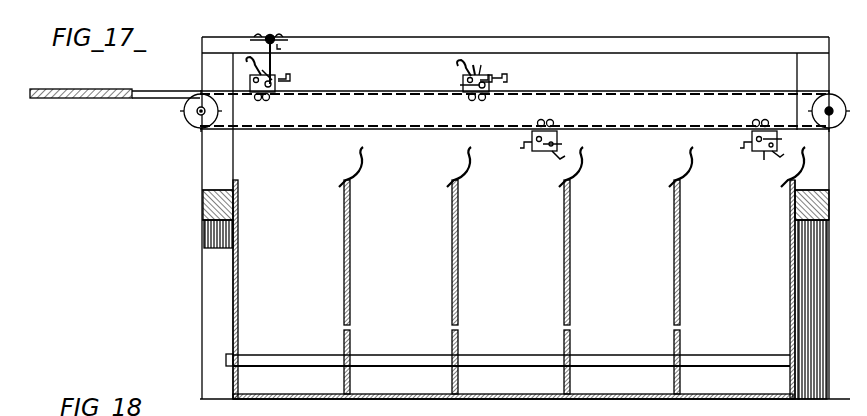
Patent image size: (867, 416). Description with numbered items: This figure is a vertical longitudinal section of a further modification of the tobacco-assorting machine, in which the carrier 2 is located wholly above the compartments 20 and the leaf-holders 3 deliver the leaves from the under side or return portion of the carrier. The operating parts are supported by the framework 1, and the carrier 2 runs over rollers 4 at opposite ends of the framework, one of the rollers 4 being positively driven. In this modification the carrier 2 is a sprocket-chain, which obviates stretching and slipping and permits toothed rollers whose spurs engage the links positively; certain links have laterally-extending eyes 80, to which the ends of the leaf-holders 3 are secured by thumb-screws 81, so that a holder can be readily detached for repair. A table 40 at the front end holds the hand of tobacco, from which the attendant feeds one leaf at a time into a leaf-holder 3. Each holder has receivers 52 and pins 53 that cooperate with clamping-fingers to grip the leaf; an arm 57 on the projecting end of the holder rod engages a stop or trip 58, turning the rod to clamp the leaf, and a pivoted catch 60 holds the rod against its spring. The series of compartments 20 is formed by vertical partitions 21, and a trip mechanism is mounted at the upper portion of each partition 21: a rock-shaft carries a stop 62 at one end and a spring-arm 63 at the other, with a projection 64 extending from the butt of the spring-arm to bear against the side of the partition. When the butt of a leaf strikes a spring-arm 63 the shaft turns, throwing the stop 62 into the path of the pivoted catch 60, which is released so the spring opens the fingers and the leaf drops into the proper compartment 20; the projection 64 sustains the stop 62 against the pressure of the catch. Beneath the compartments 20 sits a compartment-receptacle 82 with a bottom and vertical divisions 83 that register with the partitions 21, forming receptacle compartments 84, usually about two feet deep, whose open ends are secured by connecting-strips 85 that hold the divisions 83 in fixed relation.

The framework 1 is at (525, 218).
The carrier 2 is at (604, 126).
The leaf-holder 3 is at (291, 81).
The roller 4 is at (194, 116).
The compartment 20 is at (439, 256).
The vertical partition 21 is at (351, 254).
The table 40 is at (115, 84).
The receiver 52 is at (508, 78).
The pin 53 is at (547, 156).
The arm 57 is at (256, 94).
The stop or trip 58 is at (278, 74).
The pivoted catch 60 is at (781, 156).
The stop 62 is at (350, 168).
The spring-arm 63 is at (585, 156).
The projection 64 is at (672, 180).
The laterally-extending eye 80 is at (468, 96).
The thumb-screw 81 is at (274, 94).
The compartment-receptacle 82 is at (513, 405).
The vertical division 83 is at (352, 345).
The compartment of the receptacle 84 is at (290, 388).
The connecting-strip 85 is at (604, 355).